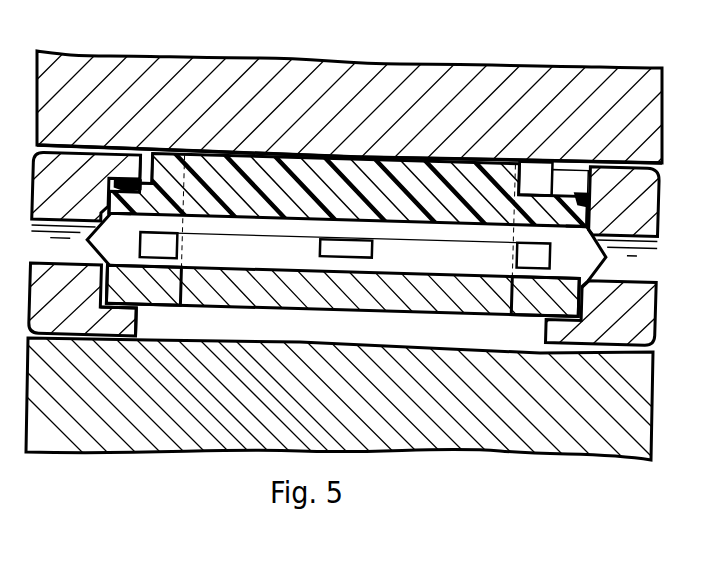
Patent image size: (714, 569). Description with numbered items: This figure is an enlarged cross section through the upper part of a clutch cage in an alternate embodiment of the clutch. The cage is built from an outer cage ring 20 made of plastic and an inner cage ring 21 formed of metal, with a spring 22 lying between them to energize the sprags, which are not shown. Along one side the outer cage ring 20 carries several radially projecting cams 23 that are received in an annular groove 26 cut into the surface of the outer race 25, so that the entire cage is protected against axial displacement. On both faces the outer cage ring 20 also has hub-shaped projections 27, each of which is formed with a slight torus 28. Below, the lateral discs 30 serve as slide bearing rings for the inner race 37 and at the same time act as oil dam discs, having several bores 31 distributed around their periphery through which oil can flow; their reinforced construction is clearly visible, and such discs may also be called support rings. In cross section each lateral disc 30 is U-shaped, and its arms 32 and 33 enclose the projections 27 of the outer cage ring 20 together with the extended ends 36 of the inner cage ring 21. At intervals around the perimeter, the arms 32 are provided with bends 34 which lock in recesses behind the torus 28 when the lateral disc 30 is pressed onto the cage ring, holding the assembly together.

The outer cage ring 20 is at (271, 170).
The inner cage ring 21 is at (401, 292).
The spring 22 is at (295, 241).
The radially projecting cams 23 is at (528, 163).
The outer race 25 is at (218, 75).
The annular groove 26 is at (522, 172).
The hub-shaped projections 27 is at (125, 203).
The torus 28 is at (115, 188).
The lateral discs 30 is at (86, 312).
The bores 31 is at (55, 261).
The arm 32 is at (135, 181).
The arm 33 is at (140, 341).
The bends 34 is at (568, 187).
The extended ends 36 is at (153, 292).
The inner race 37 is at (432, 370).